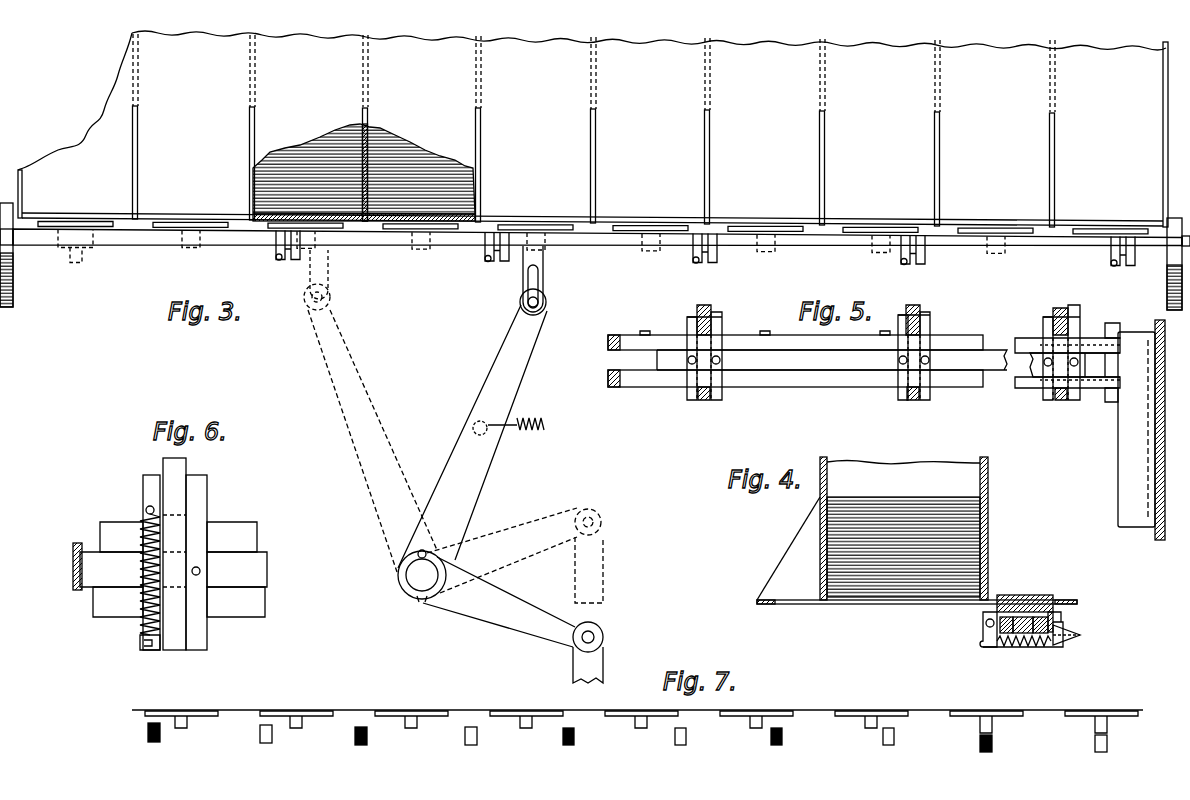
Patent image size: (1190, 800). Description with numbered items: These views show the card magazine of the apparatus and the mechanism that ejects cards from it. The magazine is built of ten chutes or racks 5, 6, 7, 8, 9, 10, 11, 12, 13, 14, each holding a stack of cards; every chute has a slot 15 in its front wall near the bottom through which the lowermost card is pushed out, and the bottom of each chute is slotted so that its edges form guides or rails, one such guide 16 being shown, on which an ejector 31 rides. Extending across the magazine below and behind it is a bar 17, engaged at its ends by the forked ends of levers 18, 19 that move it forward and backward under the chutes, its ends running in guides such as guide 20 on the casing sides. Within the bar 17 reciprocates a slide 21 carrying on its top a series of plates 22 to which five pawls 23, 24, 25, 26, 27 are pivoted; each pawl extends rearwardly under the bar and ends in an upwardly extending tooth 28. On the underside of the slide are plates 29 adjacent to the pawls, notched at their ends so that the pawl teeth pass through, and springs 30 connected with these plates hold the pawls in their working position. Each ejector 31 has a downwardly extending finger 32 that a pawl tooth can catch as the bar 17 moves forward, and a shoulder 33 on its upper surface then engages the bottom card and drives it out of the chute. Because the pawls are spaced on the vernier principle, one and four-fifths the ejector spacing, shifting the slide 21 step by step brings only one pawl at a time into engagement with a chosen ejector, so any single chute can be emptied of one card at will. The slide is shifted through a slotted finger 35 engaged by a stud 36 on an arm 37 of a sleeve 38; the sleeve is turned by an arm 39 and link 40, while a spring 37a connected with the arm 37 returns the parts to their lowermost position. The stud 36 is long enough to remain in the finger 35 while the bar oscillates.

In FIG. 3, the chute 5 is at (61, 194).
In FIG. 3, the chute 6 is at (164, 126).
In FIG. 7, the chute 6 is at (183, 700).
In FIG. 3, the chute 7 is at (280, 127).
In FIG. 7, the chute 7 is at (298, 700).
In FIG. 3, the chute 8 is at (394, 128).
In FIG. 7, the chute 8 is at (413, 700).
In FIG. 3, the chute 9 is at (511, 129).
In FIG. 7, the chute 9 is at (528, 700).
In FIG. 3, the chute 10 is at (625, 130).
In FIG. 7, the chute 10 is at (645, 700).
In FIG. 3, the chute 11 is at (739, 131).
In FIG. 7, the chute 11 is at (758, 700).
In FIG. 3, the chute 12 is at (854, 132).
In FIG. 7, the chute 12 is at (875, 700).
In FIG. 3, the chute 13 is at (969, 133).
In FIG. 7, the chute 13 is at (990, 702).
In FIG. 3, the chute 14 is at (1109, 133).
In FIG. 7, the chute 14 is at (1100, 702).
In FIG. 4, the slot 15 is at (820, 590).
In FIG. 4, the guide 16 is at (852, 605).
In FIG. 3, the bar 17 is at (398, 247).
In FIG. 5, the bar 17 is at (830, 386).
In FIG. 6, the bar 17 is at (265, 606).
In FIG. 4, the bar 17 is at (1050, 600).
In FIG. 3, the lever 18 is at (14, 284).
In FIG. 3, the lever 19 is at (1168, 302).
In FIG. 3, the guide 20 is at (14, 253).
In FIG. 5, the slide 21 is at (765, 365).
In FIG. 6, the slide 21 is at (268, 563).
In FIG. 4, the slide 21 is at (1020, 617).
In FIG. 5, the plate 22 is at (690, 378).
In FIG. 6, the plate 22 is at (200, 635).
In FIG. 4, the plate 22 is at (1006, 617).
In FIG. 3, the pawl 23 is at (292, 259).
In FIG. 6, the pawl 23 is at (176, 533).
In FIG. 4, the pawl 23 is at (1040, 648).
In FIG. 3, the pawl 24 is at (498, 262).
In FIG. 3, the pawl 25 is at (706, 262).
In FIG. 3, the pawl 26 is at (913, 264).
In FIG. 3, the pawl 27 is at (1124, 266).
In FIG. 5, the tooth 28 is at (698, 310).
In FIG. 4, the tooth 28 is at (1072, 630).
In FIG. 7, the tooth 28 is at (148, 733).
In FIG. 5, the plate 29 is at (722, 318).
In FIG. 6, the plate 29 is at (200, 507).
In FIG. 4, the plate 29 is at (1082, 635).
In FIG. 6, the spring 30 is at (140, 569).
In FIG. 4, the spring 30 is at (1008, 648).
In FIG. 4, the ejector 31 is at (1042, 600).
In FIG. 5, the finger 32 is at (777, 333).
In FIG. 4, the finger 32 is at (1062, 615).
In FIG. 7, the finger 32 is at (188, 726).
In FIG. 4, the shoulder 33 is at (995, 598).
In FIG. 3, the slotted finger 35 is at (544, 268).
In FIG. 3, the stud 36 is at (547, 303).
In FIG. 3, the arm 37 is at (472, 436).
In FIG. 3, the spring 37a is at (544, 428).
In FIG. 3, the sleeve 38 is at (400, 590).
In FIG. 3, the arm 39 is at (515, 607).
In FIG. 3, the link 40 is at (603, 655).